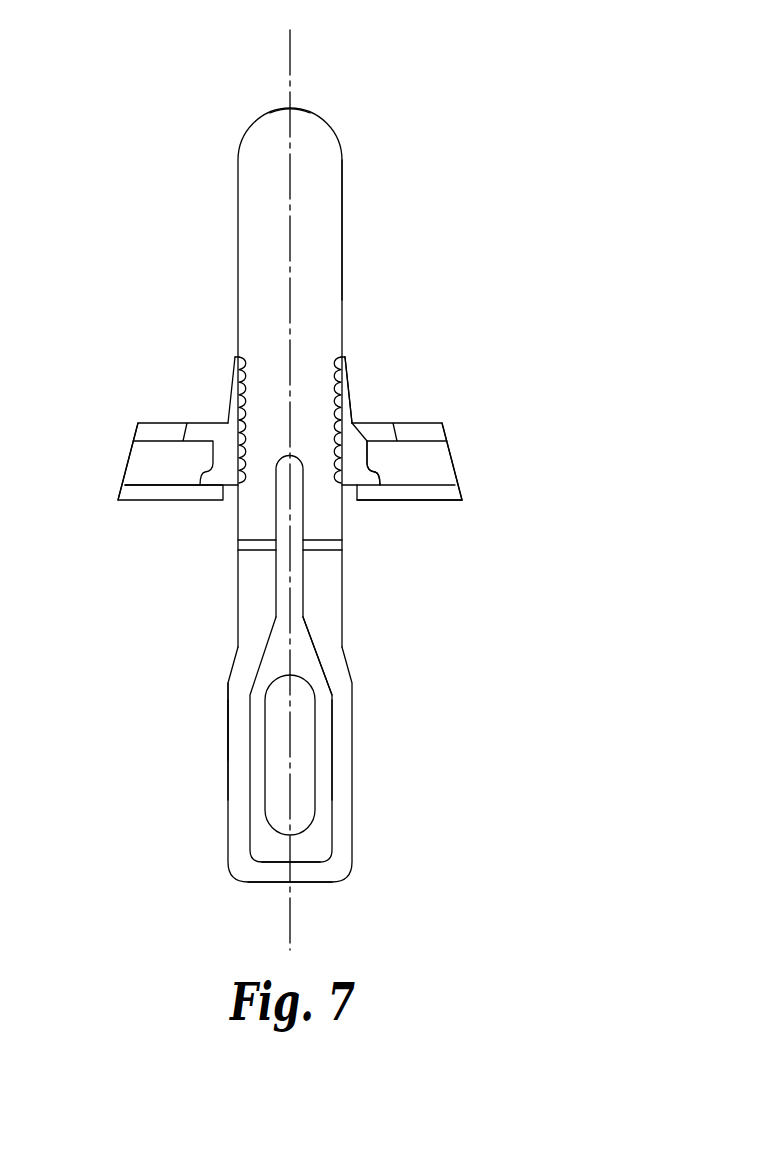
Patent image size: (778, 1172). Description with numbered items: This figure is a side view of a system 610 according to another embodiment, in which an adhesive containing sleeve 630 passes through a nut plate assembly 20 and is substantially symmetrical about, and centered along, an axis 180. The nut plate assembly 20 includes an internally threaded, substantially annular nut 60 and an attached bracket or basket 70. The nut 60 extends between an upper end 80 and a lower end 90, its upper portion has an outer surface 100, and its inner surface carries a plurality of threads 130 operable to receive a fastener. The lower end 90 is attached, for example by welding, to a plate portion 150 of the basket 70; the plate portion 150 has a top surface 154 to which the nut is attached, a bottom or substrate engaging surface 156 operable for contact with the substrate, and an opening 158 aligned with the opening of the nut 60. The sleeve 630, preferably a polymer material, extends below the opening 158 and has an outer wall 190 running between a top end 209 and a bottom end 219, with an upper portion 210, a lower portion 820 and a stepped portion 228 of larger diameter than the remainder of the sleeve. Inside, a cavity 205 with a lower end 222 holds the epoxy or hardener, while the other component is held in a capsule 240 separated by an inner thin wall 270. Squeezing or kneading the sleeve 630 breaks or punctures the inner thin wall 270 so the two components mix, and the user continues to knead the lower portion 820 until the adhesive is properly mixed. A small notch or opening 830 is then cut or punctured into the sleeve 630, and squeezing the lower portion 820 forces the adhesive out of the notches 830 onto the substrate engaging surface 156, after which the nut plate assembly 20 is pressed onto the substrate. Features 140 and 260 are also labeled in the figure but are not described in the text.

The surgical instrument assembly 610 is at (137, 130).
The axis 180 is at (292, 60).
The top end 209 is at (258, 117).
The upper portion 210 is at (238, 153).
The adhesive containing sleeve 630 is at (343, 185).
The upper end 80 is at (362, 358).
The nut 60 is at (218, 392).
The outer surface 100 is at (353, 388).
The nut plate assembly 20 is at (450, 378).
The threads 130 is at (350, 420).
The lower end 90 is at (385, 472).
The plate portion 150 is at (148, 475).
The basket 70 is at (125, 458).
The top surface 154 is at (440, 485).
The substrate engaging surface 156 is at (422, 503).
The opening 158 is at (228, 503).
The pin 140 is at (350, 485).
The notch 830 is at (258, 543).
The cavity 205 is at (307, 657).
The stepped portion 228 is at (215, 683).
The tapered transition 260 is at (325, 668).
The lower portion 820 is at (227, 745).
The inner thin wall 270 is at (315, 761).
The capsule 240 is at (275, 775).
The outer wall 190 is at (352, 823).
The lower end 222 is at (265, 864).
The bottom end 219 is at (328, 882).